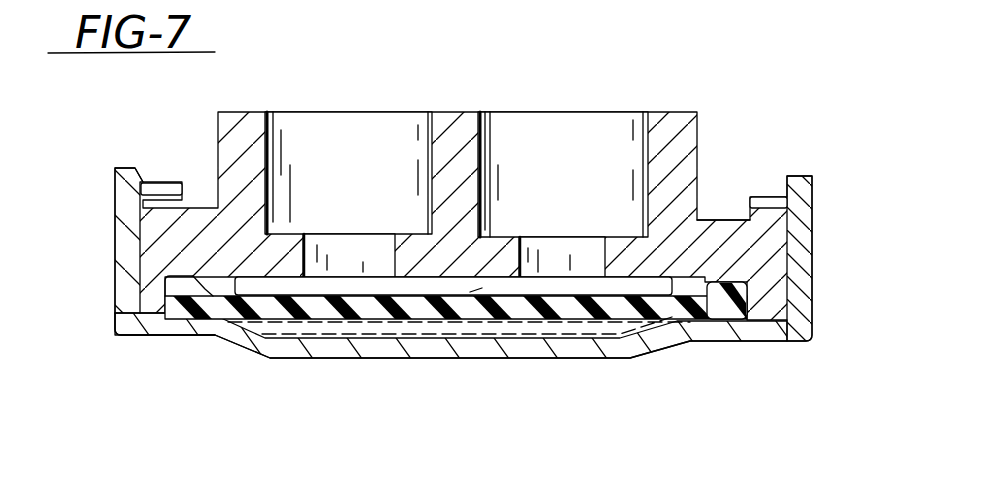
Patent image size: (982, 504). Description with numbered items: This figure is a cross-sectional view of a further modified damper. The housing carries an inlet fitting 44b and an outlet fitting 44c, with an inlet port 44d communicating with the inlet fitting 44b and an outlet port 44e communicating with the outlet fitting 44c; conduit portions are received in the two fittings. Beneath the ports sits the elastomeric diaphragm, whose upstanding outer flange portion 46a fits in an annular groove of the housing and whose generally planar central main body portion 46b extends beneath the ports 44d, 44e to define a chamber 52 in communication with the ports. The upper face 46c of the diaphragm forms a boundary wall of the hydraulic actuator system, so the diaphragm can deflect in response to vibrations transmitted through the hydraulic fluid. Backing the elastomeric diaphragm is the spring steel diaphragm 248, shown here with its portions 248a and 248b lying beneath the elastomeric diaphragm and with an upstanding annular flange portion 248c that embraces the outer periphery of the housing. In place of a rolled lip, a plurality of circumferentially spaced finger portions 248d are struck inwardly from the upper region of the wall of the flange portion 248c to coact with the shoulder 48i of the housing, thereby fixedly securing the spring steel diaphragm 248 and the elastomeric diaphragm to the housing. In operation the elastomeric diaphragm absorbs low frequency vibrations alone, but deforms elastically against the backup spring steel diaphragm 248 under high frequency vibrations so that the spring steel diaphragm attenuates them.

The housing 248 is at (266, 384).
The housing bottom flange 248a is at (160, 336).
The housing bottom plate 248b is at (400, 359).
The flange portion 248c is at (113, 290).
The finger portions 248d is at (165, 183).
The housing shoulder 48i is at (718, 220).
The inlet fitting 44b is at (272, 130).
The outlet fitting 44c is at (648, 140).
The inlet port 44d is at (330, 243).
The outlet port 44e is at (603, 262).
The outer flange portion 46a is at (727, 305).
The central main body portion 46b is at (570, 318).
The upper face 46c is at (510, 293).
The chamber 52 is at (486, 278).